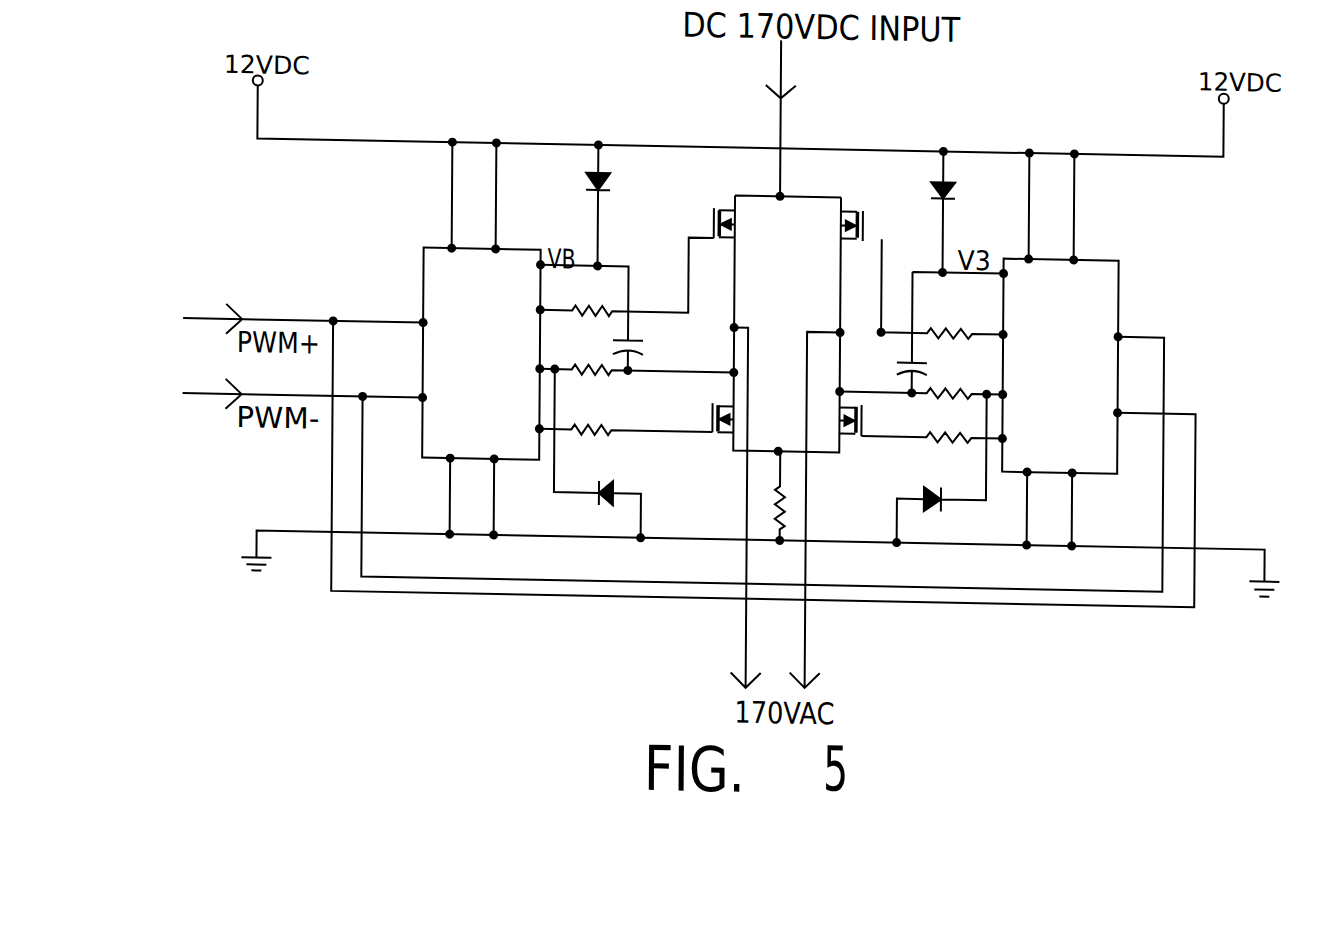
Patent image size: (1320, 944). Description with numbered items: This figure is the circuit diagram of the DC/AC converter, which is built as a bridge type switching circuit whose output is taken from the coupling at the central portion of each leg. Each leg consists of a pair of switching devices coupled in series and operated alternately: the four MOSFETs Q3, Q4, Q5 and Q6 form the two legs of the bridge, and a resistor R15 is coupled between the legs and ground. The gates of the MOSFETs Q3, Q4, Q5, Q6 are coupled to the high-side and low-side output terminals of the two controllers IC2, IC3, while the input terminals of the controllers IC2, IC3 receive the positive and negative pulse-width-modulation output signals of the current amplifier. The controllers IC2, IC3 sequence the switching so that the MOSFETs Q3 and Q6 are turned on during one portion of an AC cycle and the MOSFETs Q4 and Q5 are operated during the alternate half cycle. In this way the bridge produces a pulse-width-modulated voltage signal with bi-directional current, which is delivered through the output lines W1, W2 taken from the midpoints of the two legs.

The controller IC2 is at (481, 354).
The controller IC3 is at (1060, 367).
The MOSFET Q3 is at (703, 219).
The MOSFET Q4 is at (871, 223).
The MOSFET Q5 is at (698, 408).
The MOSFET Q6 is at (870, 418).
The resistor R15 is at (814, 496).
The output line W1 is at (729, 507).
The output line W2 is at (822, 510).